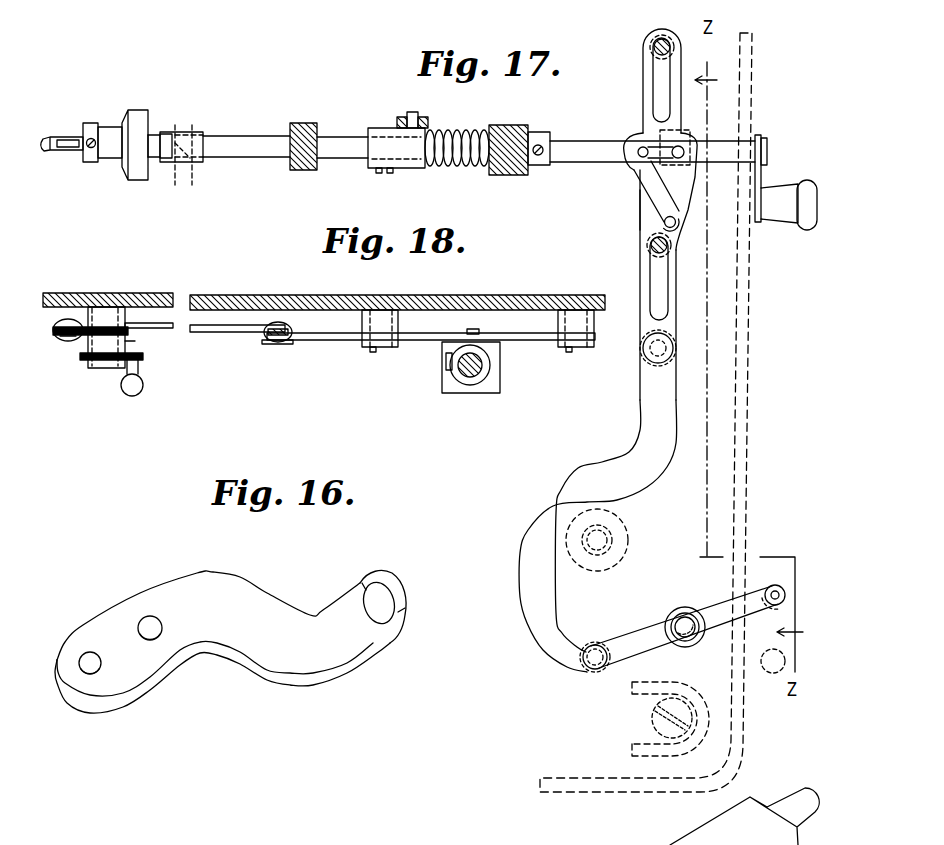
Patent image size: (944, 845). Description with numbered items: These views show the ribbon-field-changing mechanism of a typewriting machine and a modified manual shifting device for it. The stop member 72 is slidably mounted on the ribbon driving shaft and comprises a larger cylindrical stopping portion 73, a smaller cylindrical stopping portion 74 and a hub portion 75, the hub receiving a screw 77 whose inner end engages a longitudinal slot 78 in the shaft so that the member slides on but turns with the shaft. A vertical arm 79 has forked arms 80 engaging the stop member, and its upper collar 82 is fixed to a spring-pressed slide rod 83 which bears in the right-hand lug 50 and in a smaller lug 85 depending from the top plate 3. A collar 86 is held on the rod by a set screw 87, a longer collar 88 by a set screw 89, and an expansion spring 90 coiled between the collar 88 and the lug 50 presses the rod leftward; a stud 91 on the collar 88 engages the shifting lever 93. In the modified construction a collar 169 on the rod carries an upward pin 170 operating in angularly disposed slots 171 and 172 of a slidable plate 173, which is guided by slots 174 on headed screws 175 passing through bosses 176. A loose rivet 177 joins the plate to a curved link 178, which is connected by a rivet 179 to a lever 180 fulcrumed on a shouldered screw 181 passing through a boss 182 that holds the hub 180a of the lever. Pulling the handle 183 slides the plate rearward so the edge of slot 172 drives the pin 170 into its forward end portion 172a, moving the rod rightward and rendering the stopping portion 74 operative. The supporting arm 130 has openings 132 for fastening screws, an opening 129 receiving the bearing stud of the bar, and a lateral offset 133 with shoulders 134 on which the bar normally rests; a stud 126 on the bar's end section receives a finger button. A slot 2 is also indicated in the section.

In FIG. 17, the slot 2 is at (630, 750).
In FIG. 17, the top plate 3 is at (748, 468).
In FIG. 18, the top plate 3 is at (321, 295).
In FIG. 17, the right-hand lug 50 is at (504, 175).
In FIG. 18, the right-hand lug 50 is at (500, 381).
In FIG. 17, the stop member 72 is at (166, 165).
In FIG. 17, the cylindrical stopping portion 73 is at (136, 110).
In FIG. 17, the cylindrical stopping portion 74 is at (110, 127).
In FIG. 17, the hub portion 75 is at (92, 125).
In FIG. 17, the screw 77 is at (91, 148).
In FIG. 17, the slot 78 is at (64, 137).
In FIG. 17, the arm 79 is at (190, 162).
In FIG. 17, the arms of the bifurcation 80 is at (177, 157).
In FIG. 17, the collar 82 is at (196, 132).
In FIG. 17, the slide rod 83 is at (246, 157).
In FIG. 17, the lug 85 is at (304, 123).
In FIG. 17, the collar 86 is at (541, 132).
In FIG. 17, the set screw 87 is at (538, 155).
In FIG. 17, the collar 88 is at (412, 168).
In FIG. 17, the set screw 89 is at (382, 173).
In FIG. 17, the expansion spring 90 is at (450, 167).
In FIG. 17, the pin or stud 91 is at (413, 112).
In FIG. 17, the shifting lever 93 is at (398, 118).
In FIG. 17, the stud 126 is at (785, 798).
In FIG. 16, the opening 129 is at (382, 623).
In FIG. 16, the supporting arm 130 is at (283, 666).
In FIG. 16, the openings 132 is at (99, 660).
In FIG. 16, the lateral offset 133 is at (393, 577).
In FIG. 16, the ledges or shoulders 134 is at (364, 580).
In FIG. 17, the collar 169 is at (627, 136).
In FIG. 18, the collar 169 is at (473, 378).
In FIG. 17, the pin or stud 170 is at (641, 147).
In FIG. 18, the pin or stud 170 is at (479, 331).
In FIG. 17, the slot 171 is at (680, 147).
In FIG. 17, the slot 172 is at (665, 195).
In FIG. 17, the forward end portion 172a is at (676, 220).
In FIG. 17, the slidable plate 173 is at (640, 210).
In FIG. 18, the slidable plate 173 is at (322, 340).
In FIG. 17, the guide slots 174 is at (657, 95).
In FIG. 17, the headed guiding and supporting screws 175 is at (664, 40).
In FIG. 18, the headed guiding and supporting screws 175 is at (388, 352).
In FIG. 17, the depending lugs or bosses 176 is at (651, 57).
In FIG. 18, the depending lugs or bosses 176 is at (393, 323).
In FIG. 17, the double headed pin or loose rivet 177 is at (650, 350).
In FIG. 18, the double headed pin or loose rivet 177 is at (279, 344).
In FIG. 17, the curved link 178 is at (550, 597).
In FIG. 18, the curved link 178 is at (55, 323).
In FIG. 17, the loose rivet 179 is at (595, 669).
In FIG. 18, the loose rivet 179 is at (66, 338).
In FIG. 17, the lever 180 is at (632, 632).
In FIG. 18, the lever 180 is at (56, 334).
In FIG. 18, the hub 180a is at (125, 343).
In FIG. 17, the shouldered screw 181 is at (685, 633).
In FIG. 18, the shouldered screw 181 is at (101, 362).
In FIG. 17, the boss or spacing sleeve 182 is at (686, 607).
In FIG. 18, the boss or spacing sleeve 182 is at (120, 320).
In FIG. 17, the handle or finger piece 183 is at (786, 596).
In FIG. 18, the handle or finger piece 183 is at (134, 394).